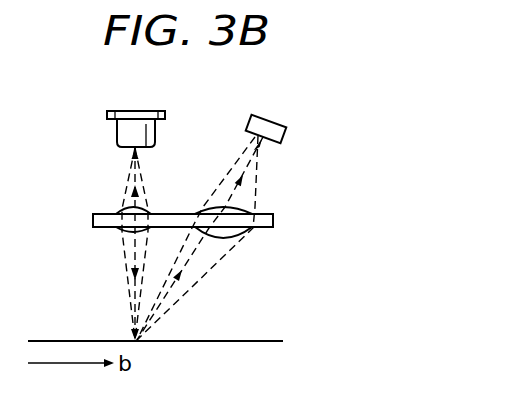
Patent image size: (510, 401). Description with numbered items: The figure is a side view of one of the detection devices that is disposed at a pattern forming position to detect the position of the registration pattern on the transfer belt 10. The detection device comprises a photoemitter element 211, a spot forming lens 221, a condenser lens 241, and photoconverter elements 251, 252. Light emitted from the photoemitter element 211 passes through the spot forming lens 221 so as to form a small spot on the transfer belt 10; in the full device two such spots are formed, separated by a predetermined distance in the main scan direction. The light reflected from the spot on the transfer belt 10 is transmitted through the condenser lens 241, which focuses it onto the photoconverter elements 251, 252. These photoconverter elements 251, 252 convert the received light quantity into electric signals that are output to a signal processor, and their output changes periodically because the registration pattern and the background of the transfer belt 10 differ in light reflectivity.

The transfer belt 10 is at (82, 339).
The photoemitter element 211 is at (108, 116).
The spot forming lens 221 is at (118, 209).
The condenser lens 241 is at (249, 208).
The photoconverter element 251 is at (288, 105).
The photoconverter element 252 is at (287, 93).